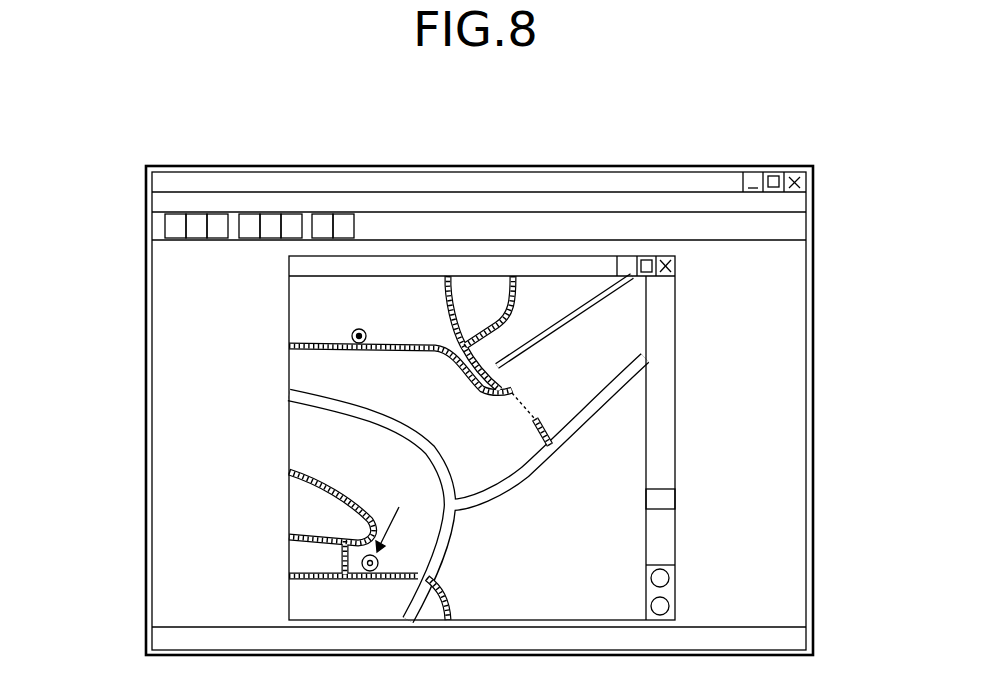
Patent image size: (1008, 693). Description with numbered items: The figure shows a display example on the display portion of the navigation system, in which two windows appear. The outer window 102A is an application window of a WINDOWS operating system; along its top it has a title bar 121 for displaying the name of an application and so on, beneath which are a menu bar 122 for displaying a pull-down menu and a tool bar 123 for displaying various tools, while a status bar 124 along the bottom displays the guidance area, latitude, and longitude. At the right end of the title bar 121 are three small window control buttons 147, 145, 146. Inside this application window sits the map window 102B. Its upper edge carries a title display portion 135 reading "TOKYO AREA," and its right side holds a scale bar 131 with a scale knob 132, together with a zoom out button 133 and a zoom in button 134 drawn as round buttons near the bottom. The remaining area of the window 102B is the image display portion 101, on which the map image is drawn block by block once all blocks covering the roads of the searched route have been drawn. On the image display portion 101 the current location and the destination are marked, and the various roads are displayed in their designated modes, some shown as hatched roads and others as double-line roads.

The image display portion 101 is at (616, 444).
The window 102A is at (812, 250).
The window 102B is at (489, 441).
The title bar 121 is at (168, 180).
The menu bar 122 is at (158, 200).
The tool bar 123 is at (158, 226).
The status bar 124 is at (165, 636).
The scale bar 131 is at (663, 462).
The scale knob 132 is at (663, 500).
The zoom out button 133 is at (665, 578).
The zoom in button 134 is at (665, 606).
The title display portion 135 is at (289, 267).
The maximize button 145 is at (771, 172).
The close button 146 is at (793, 172).
The minimize button 147 is at (752, 172).